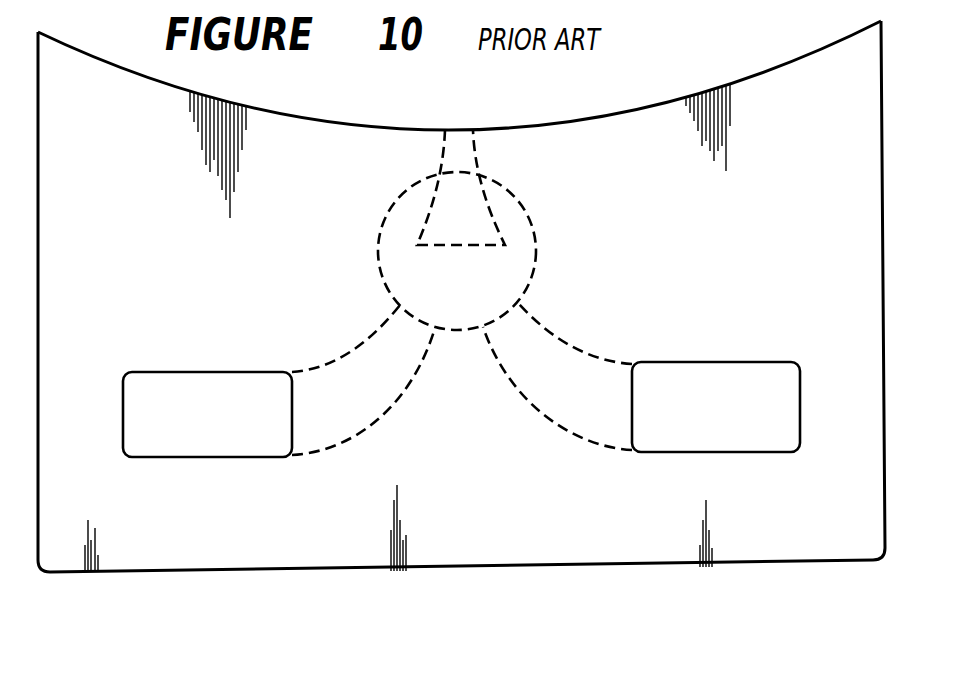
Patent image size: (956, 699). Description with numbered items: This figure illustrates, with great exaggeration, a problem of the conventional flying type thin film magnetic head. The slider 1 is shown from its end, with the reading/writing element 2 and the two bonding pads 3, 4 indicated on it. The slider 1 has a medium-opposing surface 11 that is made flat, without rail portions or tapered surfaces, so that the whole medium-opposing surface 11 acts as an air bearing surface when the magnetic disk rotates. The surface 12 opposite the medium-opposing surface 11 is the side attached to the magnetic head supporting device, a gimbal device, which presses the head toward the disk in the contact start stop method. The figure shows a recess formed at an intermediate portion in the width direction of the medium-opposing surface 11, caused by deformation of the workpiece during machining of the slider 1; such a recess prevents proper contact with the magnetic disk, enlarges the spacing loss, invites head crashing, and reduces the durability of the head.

The slider 1 is at (461, 338).
The reading/writing element 2 is at (398, 198).
The bonding pad 3 is at (193, 430).
The bonding pad 4 is at (725, 422).
The medium-opposing surface 11 is at (605, 108).
The surface opposite the medium-opposing surface 12 is at (325, 572).